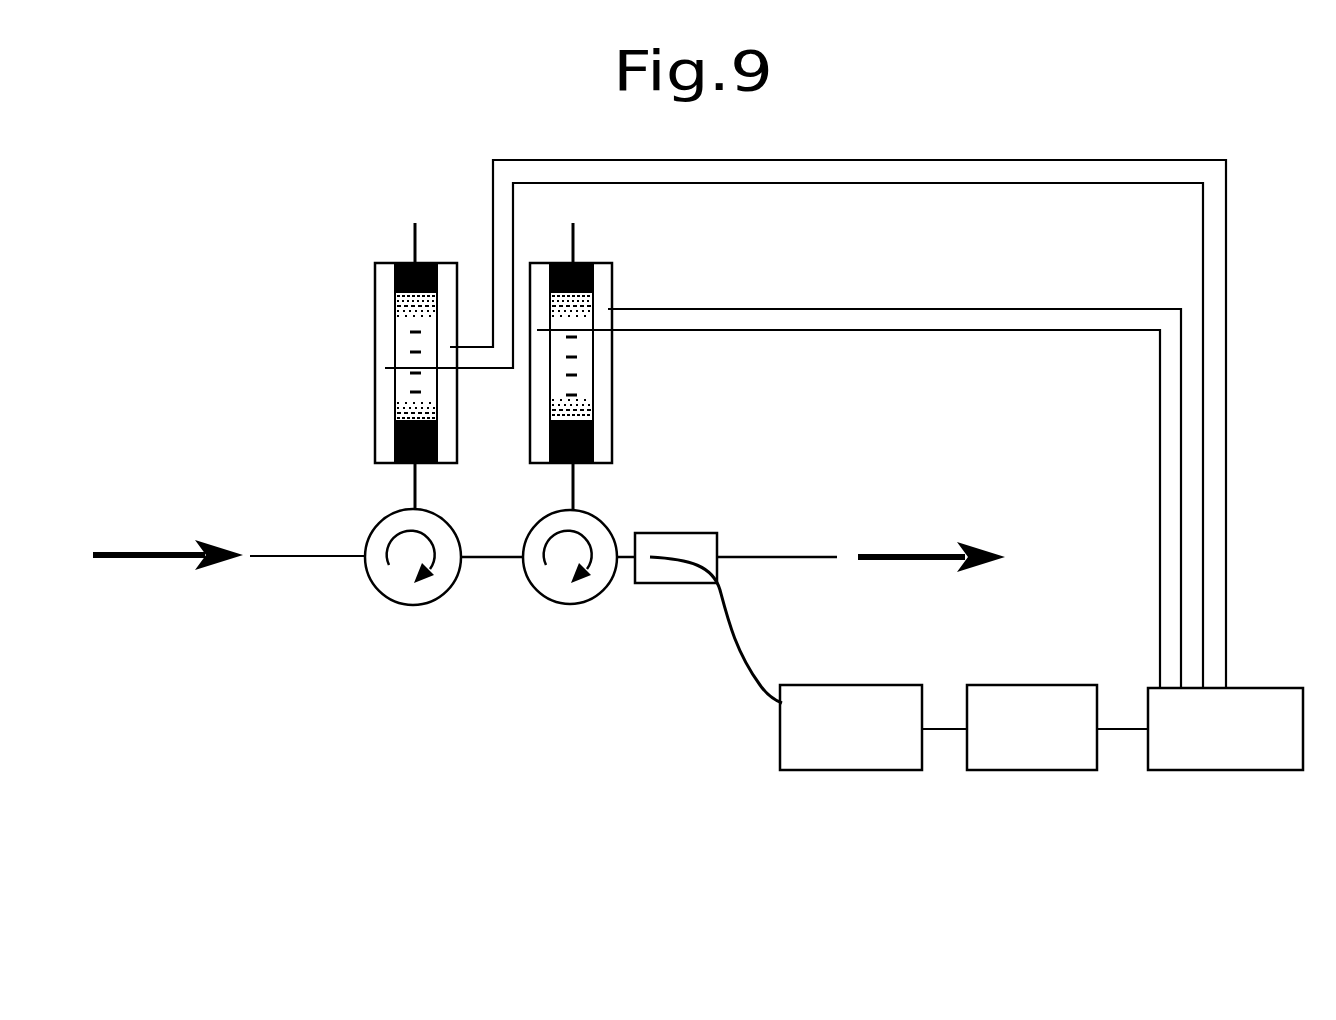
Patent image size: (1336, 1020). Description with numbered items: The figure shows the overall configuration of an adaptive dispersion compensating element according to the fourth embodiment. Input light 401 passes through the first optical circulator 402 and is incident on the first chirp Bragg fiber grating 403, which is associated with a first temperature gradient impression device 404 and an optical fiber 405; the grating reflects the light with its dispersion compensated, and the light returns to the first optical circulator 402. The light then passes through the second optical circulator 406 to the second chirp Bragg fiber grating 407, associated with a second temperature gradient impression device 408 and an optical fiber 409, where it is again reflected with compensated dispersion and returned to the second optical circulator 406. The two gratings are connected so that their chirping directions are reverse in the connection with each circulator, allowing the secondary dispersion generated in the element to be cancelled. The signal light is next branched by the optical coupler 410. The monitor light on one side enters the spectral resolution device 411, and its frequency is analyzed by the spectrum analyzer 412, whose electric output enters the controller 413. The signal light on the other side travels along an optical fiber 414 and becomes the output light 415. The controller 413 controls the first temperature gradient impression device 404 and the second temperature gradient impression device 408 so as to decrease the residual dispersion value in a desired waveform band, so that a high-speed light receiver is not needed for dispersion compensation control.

The input light 401 is at (160, 560).
The first optical circulator 402 is at (377, 517).
The first chirp Bragg fiber grating 403 is at (410, 348).
The first temperature gradient impression device 404 is at (388, 275).
The optical fiber 405 is at (417, 233).
The second optical circulator 406 is at (613, 520).
The second chirp Bragg fiber grating 407 is at (565, 402).
The second temperature gradient impression device 408 is at (608, 370).
The optical fiber 409 is at (578, 232).
The optical coupler 410 is at (633, 585).
The spectral resolution device 411 is at (858, 770).
The spectrum analyzer 412 is at (1047, 770).
The controller 413 is at (1218, 770).
The optical fiber 414 is at (793, 560).
The output light 415 is at (893, 560).